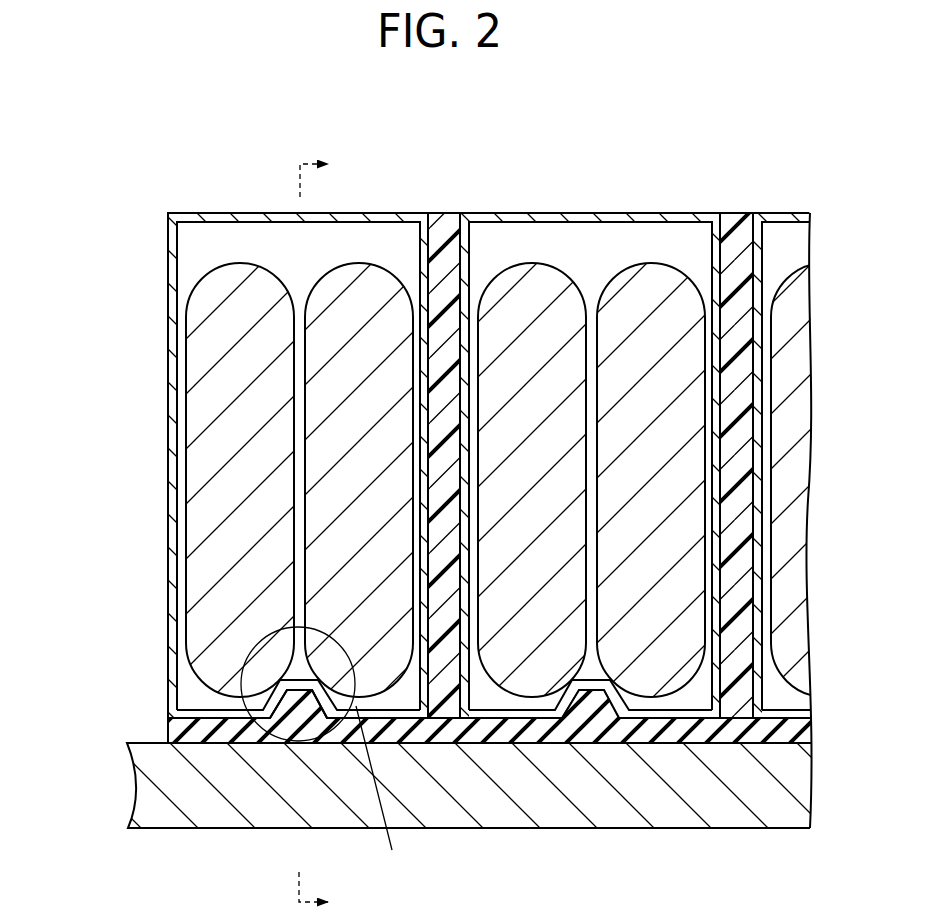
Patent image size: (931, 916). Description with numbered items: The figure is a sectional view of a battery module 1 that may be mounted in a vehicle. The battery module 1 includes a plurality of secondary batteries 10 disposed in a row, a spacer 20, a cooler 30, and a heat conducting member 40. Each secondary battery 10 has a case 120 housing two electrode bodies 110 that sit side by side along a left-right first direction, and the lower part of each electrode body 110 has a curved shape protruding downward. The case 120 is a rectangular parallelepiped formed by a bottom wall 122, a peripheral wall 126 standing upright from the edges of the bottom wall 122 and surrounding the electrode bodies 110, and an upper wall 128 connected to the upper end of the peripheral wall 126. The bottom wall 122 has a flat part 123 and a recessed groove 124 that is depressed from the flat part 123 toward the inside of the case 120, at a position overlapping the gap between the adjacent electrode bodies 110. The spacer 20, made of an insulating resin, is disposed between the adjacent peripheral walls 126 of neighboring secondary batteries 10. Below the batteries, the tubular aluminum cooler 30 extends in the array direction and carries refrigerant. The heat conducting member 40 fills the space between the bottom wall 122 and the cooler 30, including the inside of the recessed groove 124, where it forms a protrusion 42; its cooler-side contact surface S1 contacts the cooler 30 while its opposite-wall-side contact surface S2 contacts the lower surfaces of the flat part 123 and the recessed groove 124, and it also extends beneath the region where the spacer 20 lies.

The battery module 1 is at (156, 182).
The secondary battery 10 is at (468, 429).
The spacer 20 is at (444, 232).
The cooler 30 is at (190, 797).
The heat conducting member 40 is at (499, 782).
The protrusion 42 is at (305, 700).
The electrode body 110 is at (248, 264).
The case 120 is at (464, 442).
The bottom wall 122 is at (443, 669).
The flat part 123 is at (217, 712).
The recessed groove 124 is at (335, 700).
The peripheral wall 126 is at (173, 545).
The upper wall 128 is at (218, 213).
The cooler-side contact surface S1 is at (235, 743).
The opposite-wall-side contact surface S2 is at (206, 717).